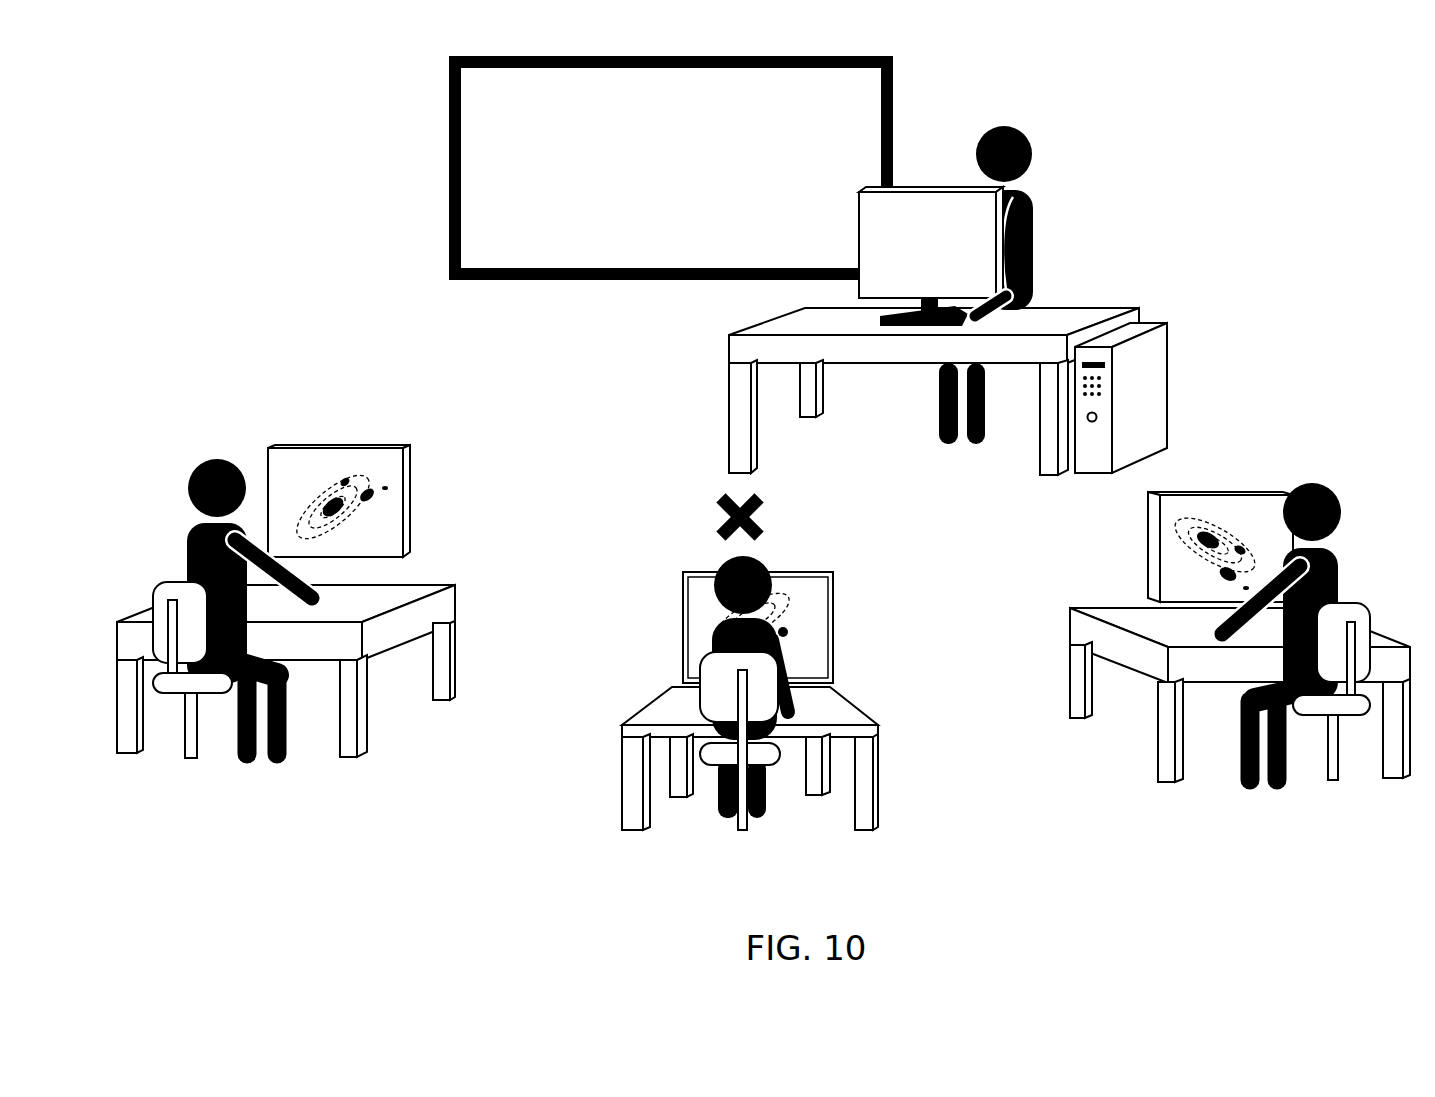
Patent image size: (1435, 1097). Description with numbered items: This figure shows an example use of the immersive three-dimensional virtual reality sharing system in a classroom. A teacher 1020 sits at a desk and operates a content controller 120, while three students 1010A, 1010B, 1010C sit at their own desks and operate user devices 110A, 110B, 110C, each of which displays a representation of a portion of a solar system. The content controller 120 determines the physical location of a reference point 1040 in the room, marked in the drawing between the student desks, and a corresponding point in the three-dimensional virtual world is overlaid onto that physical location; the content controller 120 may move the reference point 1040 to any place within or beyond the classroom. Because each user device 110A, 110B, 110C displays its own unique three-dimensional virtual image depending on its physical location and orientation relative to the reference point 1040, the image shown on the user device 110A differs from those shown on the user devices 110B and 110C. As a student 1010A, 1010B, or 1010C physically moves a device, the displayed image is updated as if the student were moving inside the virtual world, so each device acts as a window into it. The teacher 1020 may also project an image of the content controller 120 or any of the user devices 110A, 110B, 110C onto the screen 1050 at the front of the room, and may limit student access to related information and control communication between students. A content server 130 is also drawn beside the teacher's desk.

The screen 1050 is at (418, 178).
The content controller 120 is at (919, 170).
The teacher 1020 is at (1064, 254).
The content server 130 is at (1204, 338).
The user device 110A is at (277, 425).
The student 1010A is at (263, 794).
The user device 110B is at (848, 607).
The student 1010B is at (709, 850).
The reference point 1040 is at (695, 517).
The user device 110C is at (1229, 468).
The student 1010C is at (1242, 809).